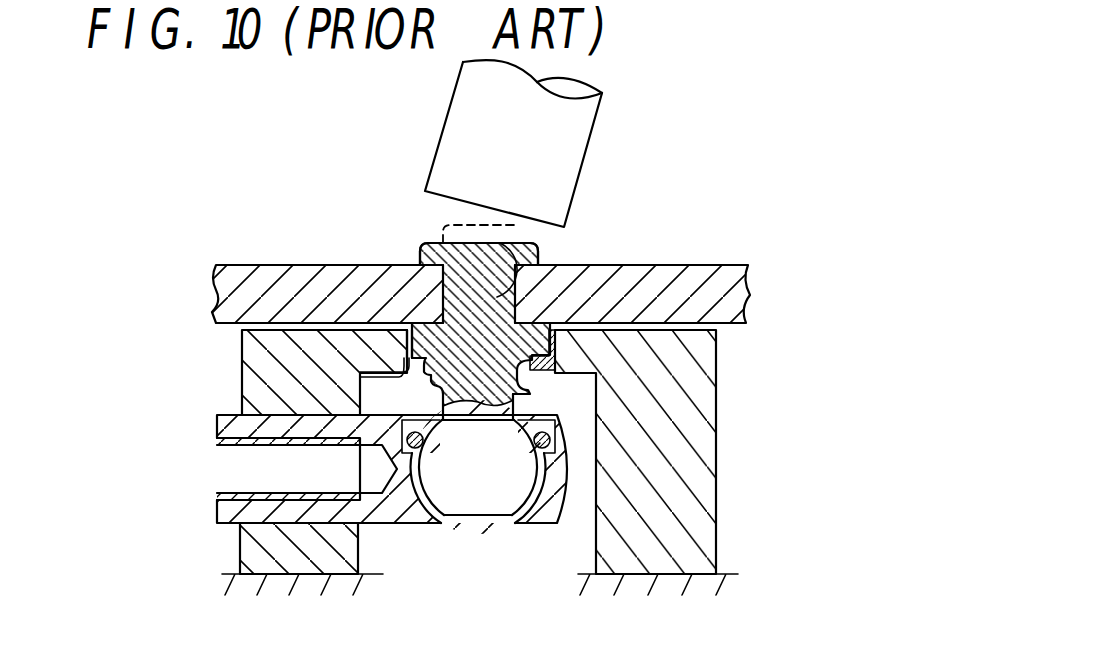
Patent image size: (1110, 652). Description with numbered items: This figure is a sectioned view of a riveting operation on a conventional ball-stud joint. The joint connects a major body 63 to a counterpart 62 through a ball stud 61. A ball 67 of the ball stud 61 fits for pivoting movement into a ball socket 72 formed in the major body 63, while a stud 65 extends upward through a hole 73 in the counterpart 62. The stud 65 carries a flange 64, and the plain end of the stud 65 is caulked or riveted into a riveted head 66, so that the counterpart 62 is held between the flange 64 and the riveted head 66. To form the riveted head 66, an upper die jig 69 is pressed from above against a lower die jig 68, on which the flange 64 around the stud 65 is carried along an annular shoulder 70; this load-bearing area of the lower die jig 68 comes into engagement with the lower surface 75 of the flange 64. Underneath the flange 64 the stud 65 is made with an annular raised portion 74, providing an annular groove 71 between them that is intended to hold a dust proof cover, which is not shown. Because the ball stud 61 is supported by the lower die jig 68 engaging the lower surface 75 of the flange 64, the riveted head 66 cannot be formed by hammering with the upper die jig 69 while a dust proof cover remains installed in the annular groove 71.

The ball stud 61 is at (490, 345).
The counterpart 62 is at (708, 278).
The major body 63 is at (383, 505).
The flange 64 is at (412, 333).
The stud 65 is at (462, 290).
The riveted head 66 is at (540, 252).
The ball 67 is at (478, 488).
The lower die jig 68 is at (675, 455).
The upper die jig 69 is at (565, 147).
The annular shoulder 70 is at (545, 366).
The annular groove 71 is at (410, 370).
The ball socket 72 is at (523, 490).
The hole 73 is at (512, 243).
The annular raised portion 74 is at (432, 380).
The lower surface of the flange 75 is at (415, 362).